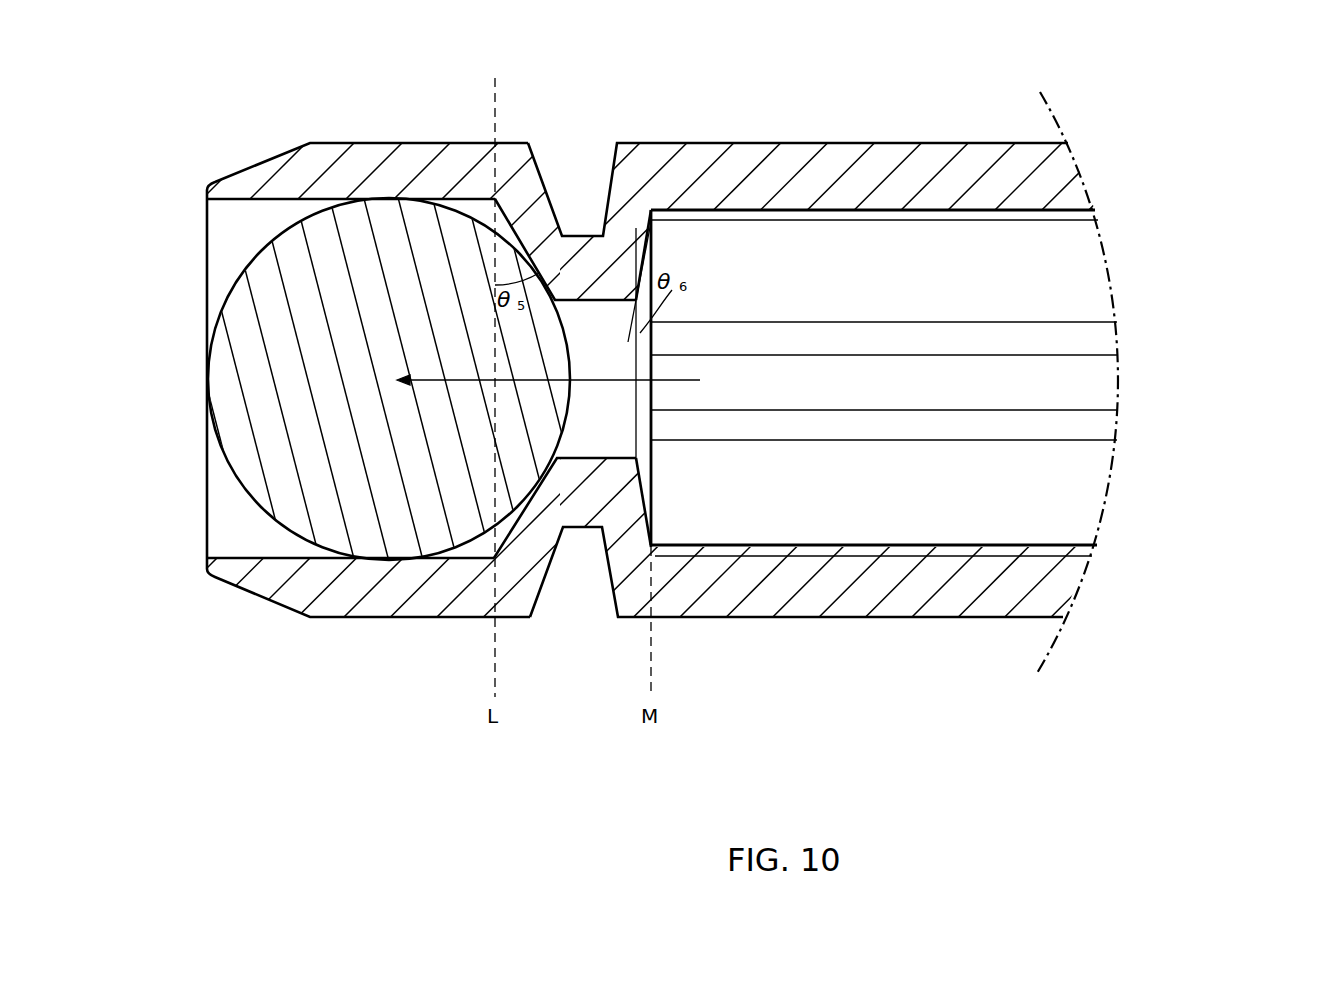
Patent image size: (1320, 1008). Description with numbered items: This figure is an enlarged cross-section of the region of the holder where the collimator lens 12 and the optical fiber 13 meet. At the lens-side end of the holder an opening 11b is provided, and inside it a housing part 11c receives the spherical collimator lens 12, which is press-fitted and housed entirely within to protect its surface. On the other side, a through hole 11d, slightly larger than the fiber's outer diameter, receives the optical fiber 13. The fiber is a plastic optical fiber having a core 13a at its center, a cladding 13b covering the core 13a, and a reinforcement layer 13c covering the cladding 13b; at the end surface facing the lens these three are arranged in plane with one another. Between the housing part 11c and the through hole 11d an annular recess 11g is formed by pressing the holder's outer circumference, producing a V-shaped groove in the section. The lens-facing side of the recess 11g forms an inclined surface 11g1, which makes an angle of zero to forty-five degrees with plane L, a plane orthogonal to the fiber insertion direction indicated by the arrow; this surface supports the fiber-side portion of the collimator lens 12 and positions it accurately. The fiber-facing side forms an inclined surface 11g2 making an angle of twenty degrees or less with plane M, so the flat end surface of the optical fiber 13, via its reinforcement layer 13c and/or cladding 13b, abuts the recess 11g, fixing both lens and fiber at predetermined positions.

The opening 11b is at (207, 248).
The housing part 11c is at (226, 524).
The through hole 11d is at (881, 220).
The recess 11g is at (612, 185).
The inclined surface 11g1 is at (508, 228).
The inclined surface 11g2 is at (653, 260).
The collimator lens 12 is at (220, 382).
The optical fiber 13 is at (1223, 277).
The core 13a is at (1090, 390).
The cladding 13b is at (1090, 343).
The reinforcement layer 13c is at (1090, 292).